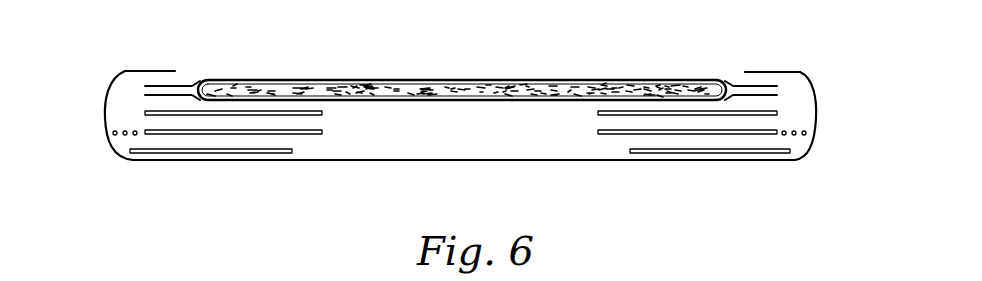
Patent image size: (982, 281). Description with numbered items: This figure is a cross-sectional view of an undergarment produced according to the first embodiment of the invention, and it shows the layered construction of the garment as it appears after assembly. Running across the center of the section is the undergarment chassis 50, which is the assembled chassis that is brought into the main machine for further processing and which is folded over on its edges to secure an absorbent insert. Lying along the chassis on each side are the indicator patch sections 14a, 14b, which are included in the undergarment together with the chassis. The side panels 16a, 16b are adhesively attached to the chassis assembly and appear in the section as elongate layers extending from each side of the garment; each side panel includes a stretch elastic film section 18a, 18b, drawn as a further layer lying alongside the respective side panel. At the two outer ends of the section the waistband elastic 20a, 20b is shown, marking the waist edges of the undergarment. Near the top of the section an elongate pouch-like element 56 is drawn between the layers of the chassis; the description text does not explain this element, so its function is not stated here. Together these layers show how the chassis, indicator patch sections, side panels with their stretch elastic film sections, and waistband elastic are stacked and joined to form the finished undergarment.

The indicator patch section 14a is at (200, 151).
The indicator patch section 14b is at (727, 153).
The side panel 16a is at (323, 113).
The side panel 16b is at (597, 113).
The stretch elastic film section 18a is at (310, 135).
The stretch elastic film section 18b is at (610, 135).
The waistband elastic 20a is at (126, 131).
The waistband elastic 20b is at (808, 138).
The undergarment chassis 50 is at (777, 92).
The adhesive pouch 56 is at (714, 80).